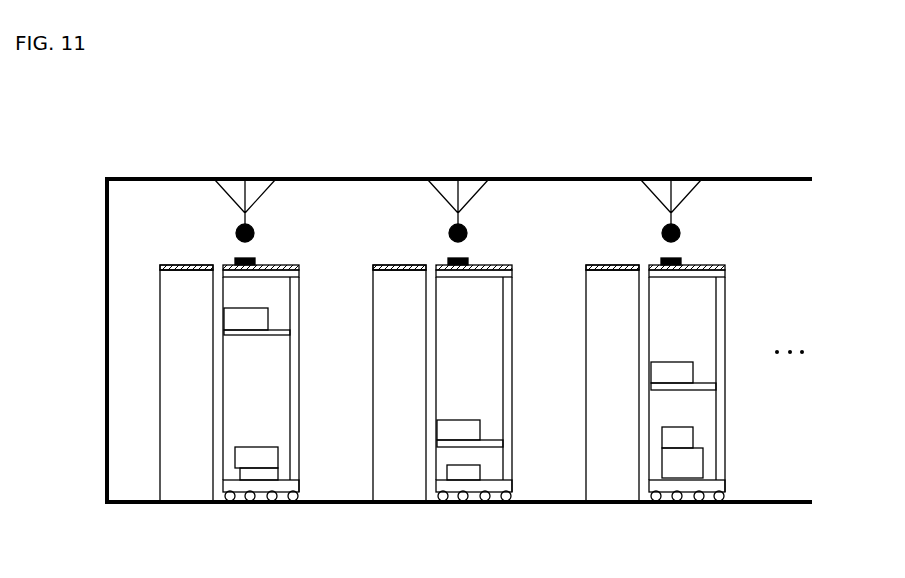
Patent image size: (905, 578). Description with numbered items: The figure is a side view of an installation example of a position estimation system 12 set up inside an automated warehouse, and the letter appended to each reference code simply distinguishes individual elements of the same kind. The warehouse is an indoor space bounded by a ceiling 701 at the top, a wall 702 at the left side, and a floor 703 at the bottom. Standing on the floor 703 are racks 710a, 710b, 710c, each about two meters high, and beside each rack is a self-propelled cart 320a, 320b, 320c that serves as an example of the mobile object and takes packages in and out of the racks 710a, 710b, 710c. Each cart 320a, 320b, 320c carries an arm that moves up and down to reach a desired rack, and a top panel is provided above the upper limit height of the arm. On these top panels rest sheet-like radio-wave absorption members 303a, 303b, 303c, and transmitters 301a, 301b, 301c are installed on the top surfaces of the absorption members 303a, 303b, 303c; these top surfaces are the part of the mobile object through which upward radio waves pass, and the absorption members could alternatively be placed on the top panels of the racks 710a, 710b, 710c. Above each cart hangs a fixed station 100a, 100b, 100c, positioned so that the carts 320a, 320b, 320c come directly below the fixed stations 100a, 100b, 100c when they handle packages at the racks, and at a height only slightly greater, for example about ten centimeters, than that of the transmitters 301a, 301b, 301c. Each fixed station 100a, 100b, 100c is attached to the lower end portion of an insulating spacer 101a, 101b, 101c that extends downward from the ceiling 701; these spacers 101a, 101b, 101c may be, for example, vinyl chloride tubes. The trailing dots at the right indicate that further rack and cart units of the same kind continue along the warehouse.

The position estimation system 12 is at (578, 122).
The ceiling 701 is at (352, 178).
The wall 702 is at (105, 360).
The floor 703 is at (773, 506).
The fixed station 100a is at (250, 226).
The fixed station 100b is at (463, 226).
The fixed station 100c is at (676, 226).
The insulating spacer 101a is at (240, 225).
The insulating spacer 101b is at (453, 225).
The insulating spacer 101c is at (666, 225).
The transmitter 301a is at (257, 259).
The transmitter 301b is at (470, 259).
The transmitter 301c is at (683, 259).
The radio-wave absorption member 303a is at (213, 267).
The radio-wave absorption member 303b is at (426, 267).
The radio-wave absorption member 303c is at (639, 267).
The self-propelled cart 320a is at (290, 483).
The self-propelled cart 320b is at (503, 483).
The self-propelled cart 320c is at (716, 483).
The rack 710a is at (180, 482).
The rack 710b is at (393, 482).
The rack 710c is at (606, 482).